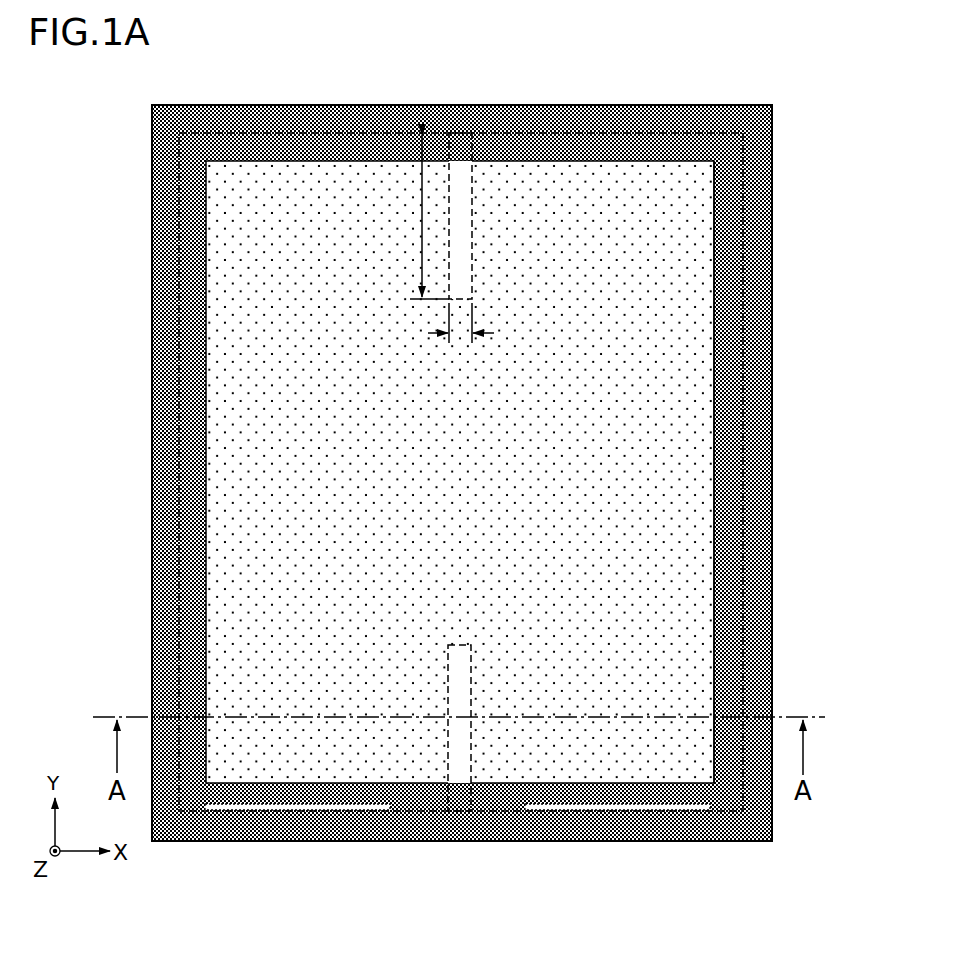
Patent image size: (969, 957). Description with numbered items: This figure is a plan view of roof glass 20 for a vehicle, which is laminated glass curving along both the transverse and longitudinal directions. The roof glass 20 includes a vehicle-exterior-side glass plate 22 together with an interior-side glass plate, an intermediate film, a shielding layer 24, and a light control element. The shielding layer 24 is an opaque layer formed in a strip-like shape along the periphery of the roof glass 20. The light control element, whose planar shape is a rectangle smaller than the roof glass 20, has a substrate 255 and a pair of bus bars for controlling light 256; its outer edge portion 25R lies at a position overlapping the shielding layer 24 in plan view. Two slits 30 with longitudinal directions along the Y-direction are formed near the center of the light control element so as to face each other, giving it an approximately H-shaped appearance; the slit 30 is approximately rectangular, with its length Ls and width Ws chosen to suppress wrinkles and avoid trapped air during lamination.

The roof glass 20 is at (100, 101).
The glass plate 22 is at (748, 105).
The shielding layer 24 is at (762, 194).
The substrate 255 is at (672, 380).
The outer edge portion 25R is at (745, 483).
The bus bars for controlling light 256 is at (303, 812).
The slit 30 is at (470, 219).